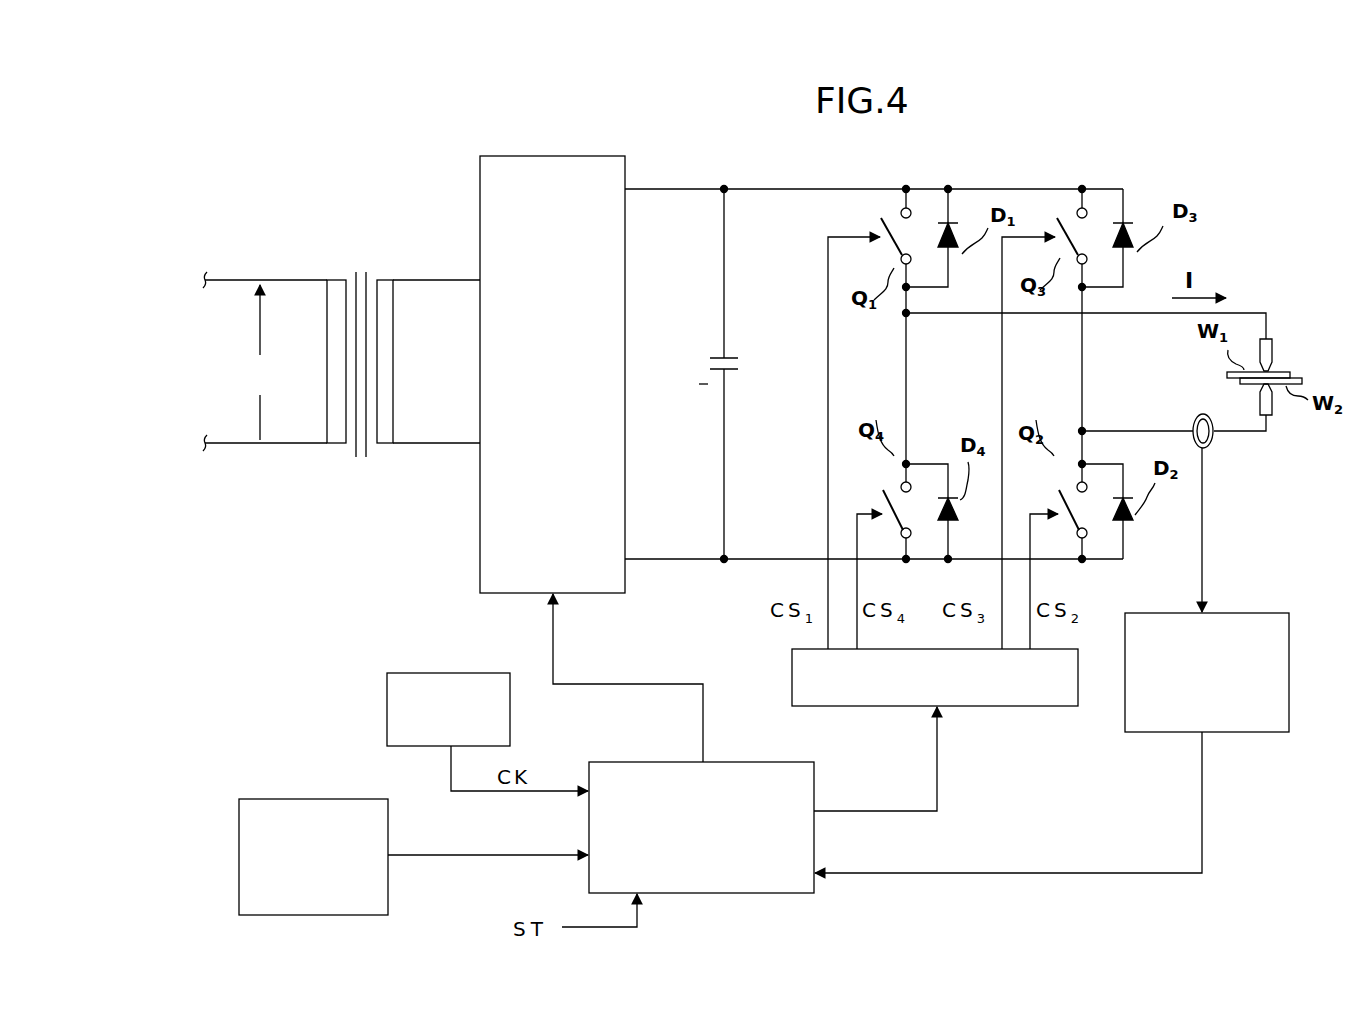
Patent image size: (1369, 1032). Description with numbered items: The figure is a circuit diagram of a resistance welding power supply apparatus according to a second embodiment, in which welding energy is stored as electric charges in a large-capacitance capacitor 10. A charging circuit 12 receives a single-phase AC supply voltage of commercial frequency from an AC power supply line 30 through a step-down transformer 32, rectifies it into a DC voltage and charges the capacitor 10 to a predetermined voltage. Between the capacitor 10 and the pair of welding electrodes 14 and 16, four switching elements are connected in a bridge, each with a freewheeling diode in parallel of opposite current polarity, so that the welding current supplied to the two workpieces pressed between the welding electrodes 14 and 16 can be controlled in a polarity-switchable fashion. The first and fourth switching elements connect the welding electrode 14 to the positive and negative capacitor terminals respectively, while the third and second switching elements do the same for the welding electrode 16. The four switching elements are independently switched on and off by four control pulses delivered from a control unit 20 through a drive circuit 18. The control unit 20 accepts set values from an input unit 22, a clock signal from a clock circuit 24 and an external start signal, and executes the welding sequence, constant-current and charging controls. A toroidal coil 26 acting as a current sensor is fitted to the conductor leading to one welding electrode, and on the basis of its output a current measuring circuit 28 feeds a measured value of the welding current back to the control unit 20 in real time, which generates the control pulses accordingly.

The capacitor 10 is at (740, 364).
The charging circuit 12 is at (585, 156).
The welding electrode 14 is at (1273, 358).
The welding electrode 16 is at (1273, 403).
The drive circuit 18 is at (1005, 706).
The control unit 20 is at (773, 762).
The input unit 22 is at (272, 799).
The clock circuit 24 is at (405, 673).
The toroidal coil 26 is at (1212, 445).
The current measuring circuit 28 is at (1290, 637).
The AC power supply line 30 is at (307, 280).
The step-down transformer 32 is at (360, 258).